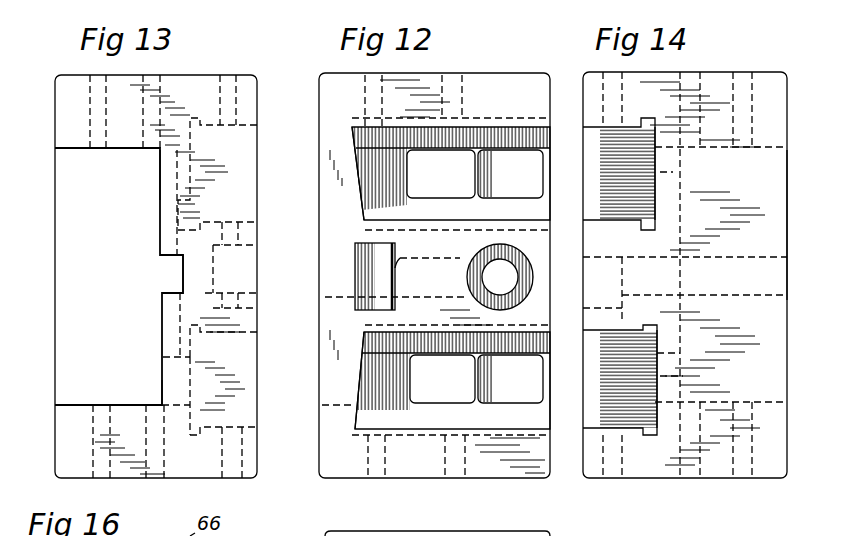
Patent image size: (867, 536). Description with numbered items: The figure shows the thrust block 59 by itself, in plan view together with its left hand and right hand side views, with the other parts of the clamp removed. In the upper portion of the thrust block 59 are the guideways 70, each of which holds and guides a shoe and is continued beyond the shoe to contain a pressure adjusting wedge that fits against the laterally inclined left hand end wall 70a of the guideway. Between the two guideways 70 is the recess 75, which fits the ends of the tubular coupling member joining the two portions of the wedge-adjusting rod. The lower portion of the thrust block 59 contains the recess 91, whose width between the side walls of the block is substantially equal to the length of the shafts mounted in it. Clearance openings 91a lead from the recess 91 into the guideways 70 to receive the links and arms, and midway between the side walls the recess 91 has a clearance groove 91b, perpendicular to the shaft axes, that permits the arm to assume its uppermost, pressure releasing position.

In FIG. 13, the thrust block 59 is at (204, 86).
In FIG. 12, the thrust block 59 is at (532, 75).
In FIG. 14, the thrust block 59 is at (775, 74).
In FIG. 13, the guideway 70 is at (246, 165).
In FIG. 12, the guideway 70 is at (388, 190).
In FIG. 14, the guideway 70 is at (627, 124).
In FIG. 16, the guideway 70 is at (465, 526).
In FIG. 12, the left hand end wall of the guideway 70a is at (366, 174).
In FIG. 14, the left hand end wall of the guideway 70a is at (655, 174).
In FIG. 13, the recess 75 is at (240, 283).
In FIG. 12, the recess 75 is at (372, 258).
In FIG. 13, the recess 91 is at (72, 172).
In FIG. 14, the recess 91 is at (780, 192).
In FIG. 13, the clearance opening 91a is at (163, 173).
In FIG. 12, the clearance opening 91a is at (458, 150).
In FIG. 14, the clearance opening 91a is at (673, 172).
In FIG. 13, the clearance groove 91b is at (176, 276).
In FIG. 12, the clearance groove 91b is at (314, 318).